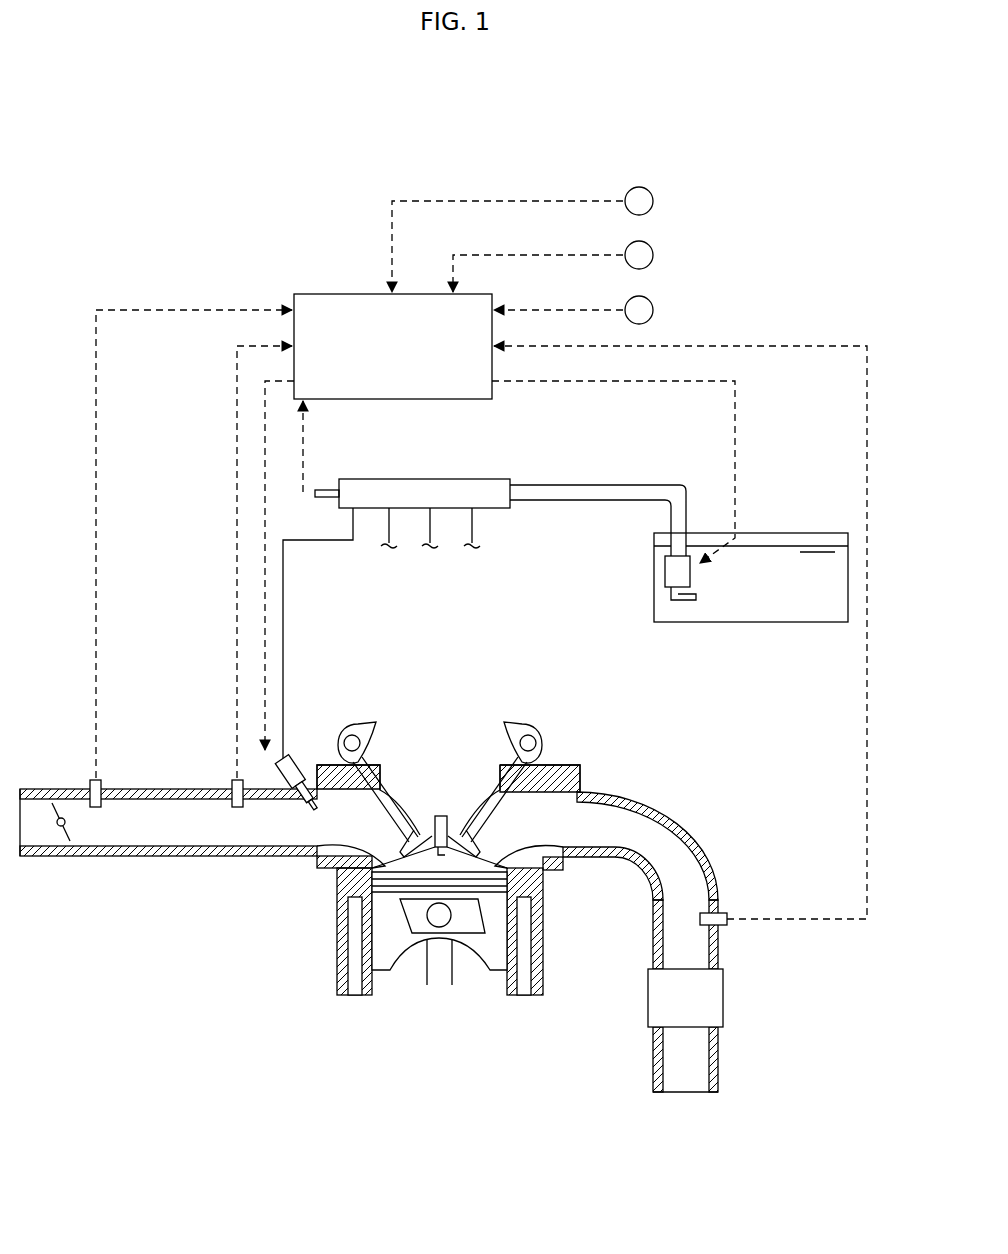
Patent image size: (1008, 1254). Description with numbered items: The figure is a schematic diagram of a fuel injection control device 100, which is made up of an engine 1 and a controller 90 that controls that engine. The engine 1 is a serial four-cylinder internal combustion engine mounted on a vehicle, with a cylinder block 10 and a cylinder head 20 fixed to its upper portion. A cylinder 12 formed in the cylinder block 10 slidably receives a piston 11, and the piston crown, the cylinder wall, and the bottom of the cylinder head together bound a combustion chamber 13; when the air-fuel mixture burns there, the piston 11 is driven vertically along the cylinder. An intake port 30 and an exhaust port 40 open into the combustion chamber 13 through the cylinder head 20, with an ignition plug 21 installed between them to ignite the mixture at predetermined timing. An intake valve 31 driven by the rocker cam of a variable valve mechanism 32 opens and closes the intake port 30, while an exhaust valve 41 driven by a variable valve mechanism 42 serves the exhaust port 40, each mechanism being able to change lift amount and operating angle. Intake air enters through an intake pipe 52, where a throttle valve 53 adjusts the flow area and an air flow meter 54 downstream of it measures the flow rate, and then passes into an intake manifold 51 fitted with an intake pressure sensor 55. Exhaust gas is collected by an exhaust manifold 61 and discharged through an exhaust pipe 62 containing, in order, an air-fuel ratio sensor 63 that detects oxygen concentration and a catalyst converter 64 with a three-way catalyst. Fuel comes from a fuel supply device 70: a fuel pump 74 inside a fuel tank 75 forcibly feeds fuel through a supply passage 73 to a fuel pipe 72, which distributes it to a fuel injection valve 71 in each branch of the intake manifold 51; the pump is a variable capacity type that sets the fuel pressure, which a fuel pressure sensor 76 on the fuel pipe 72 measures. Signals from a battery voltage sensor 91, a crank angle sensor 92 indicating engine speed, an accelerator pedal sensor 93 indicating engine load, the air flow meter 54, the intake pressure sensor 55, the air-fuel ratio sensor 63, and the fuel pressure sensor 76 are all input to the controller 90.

The fuel injection control device 100 is at (165, 128).
The engine 1 is at (602, 758).
The cylinder block 10 is at (340, 968).
The piston 11 is at (474, 950).
The cylinder 12 is at (386, 930).
The combustion chamber 13 is at (470, 866).
The cylinder head 20 is at (388, 784).
The ignition plug 21 is at (442, 816).
The intake port 30 is at (346, 840).
The intake valve 31 is at (405, 790).
The variable valve mechanism 32 is at (352, 724).
The exhaust port 40 is at (536, 836).
The exhaust valve 41 is at (526, 796).
The variable valve mechanism 42 is at (532, 724).
The intake manifold 51 is at (248, 856).
The intake pipe 52 is at (120, 856).
The throttle valve 53 is at (54, 832).
The air flow meter 54 is at (103, 780).
The intake pressure sensor 55 is at (228, 780).
The exhaust manifold 61 is at (618, 858).
The exhaust pipe 62 is at (653, 948).
The air-fuel ratio sensor 63 is at (720, 913).
The catalyst converter 64 is at (648, 1006).
The fuel supply device 70 is at (546, 466).
The fuel injection valve 71 is at (297, 760).
The fuel pipe 72 is at (428, 479).
The supply passage 73 is at (574, 500).
The fuel pump 74 is at (665, 572).
The fuel tank 75 is at (752, 622).
The fuel pressure sensor 76 is at (327, 490).
The controller 90 is at (330, 294).
The battery voltage sensor 91 is at (654, 310).
The crank angle sensor 92 is at (654, 255).
The accelerator pedal sensor 93 is at (654, 201).